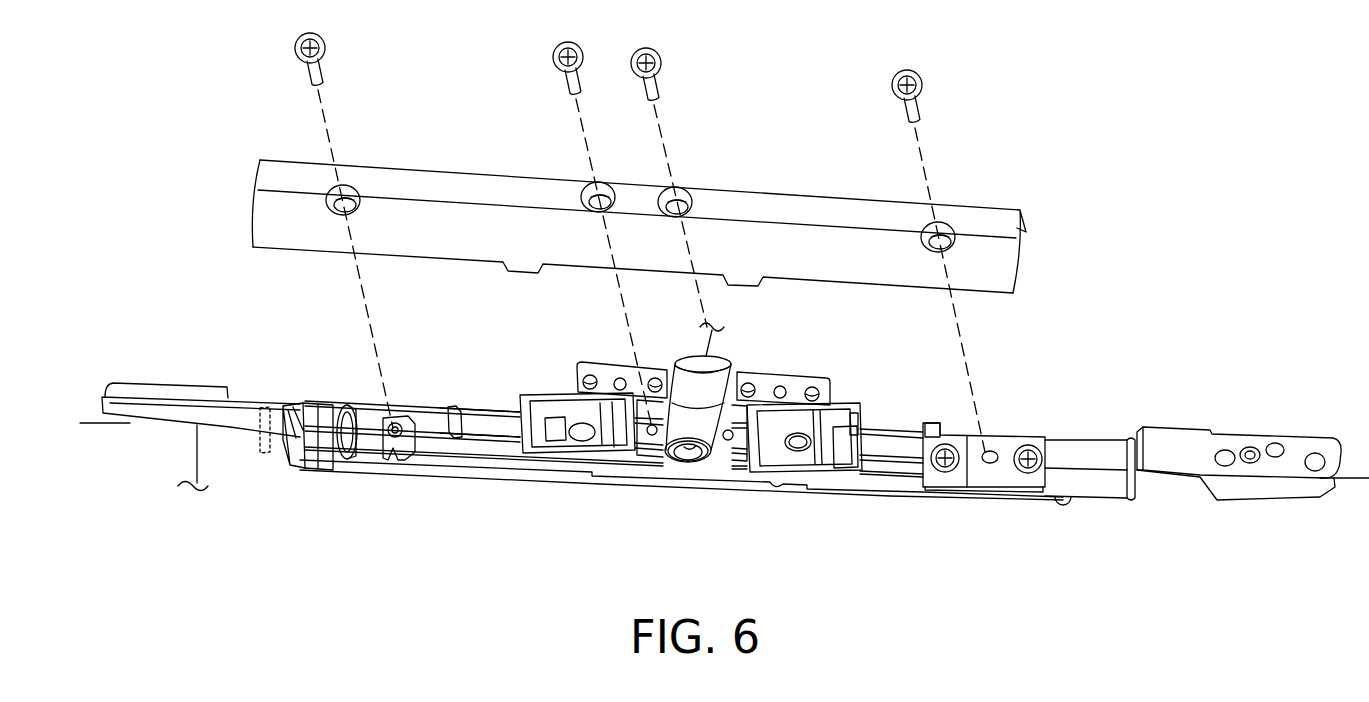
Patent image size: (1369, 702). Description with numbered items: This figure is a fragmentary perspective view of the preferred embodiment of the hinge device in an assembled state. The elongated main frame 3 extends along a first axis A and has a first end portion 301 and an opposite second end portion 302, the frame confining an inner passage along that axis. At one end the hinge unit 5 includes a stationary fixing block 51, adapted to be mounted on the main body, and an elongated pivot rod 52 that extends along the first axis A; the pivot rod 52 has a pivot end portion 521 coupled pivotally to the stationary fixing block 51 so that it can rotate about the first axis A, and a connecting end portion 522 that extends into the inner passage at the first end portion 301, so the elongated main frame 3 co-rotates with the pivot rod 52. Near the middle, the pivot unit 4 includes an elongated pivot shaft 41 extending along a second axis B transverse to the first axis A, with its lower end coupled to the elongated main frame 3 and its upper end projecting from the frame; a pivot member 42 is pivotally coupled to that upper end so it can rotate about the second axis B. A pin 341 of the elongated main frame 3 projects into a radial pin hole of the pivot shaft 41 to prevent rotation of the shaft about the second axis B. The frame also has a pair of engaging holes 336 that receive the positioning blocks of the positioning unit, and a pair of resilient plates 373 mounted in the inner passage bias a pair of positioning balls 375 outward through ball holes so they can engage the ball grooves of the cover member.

The elongated main frame 3 is at (1053, 427).
The first end portion 301 is at (1063, 502).
The second end portion 302 is at (318, 458).
The engaging holes 336 is at (487, 423).
The pin 341 is at (683, 452).
The resilient plates 373 is at (798, 452).
The positioning balls 375 is at (803, 453).
The pivot unit 4 is at (780, 357).
The pivot shaft 41 is at (687, 410).
The pivot member 42 is at (714, 377).
The hinge unit 5 is at (1118, 450).
The stationary fixing block 51 is at (1305, 443).
The pivot rod 52 is at (970, 493).
The pivot end portion 521 is at (1093, 487).
The connecting end portion 522 is at (942, 480).
The first axis A is at (1348, 480).
The second axis B is at (670, 527).